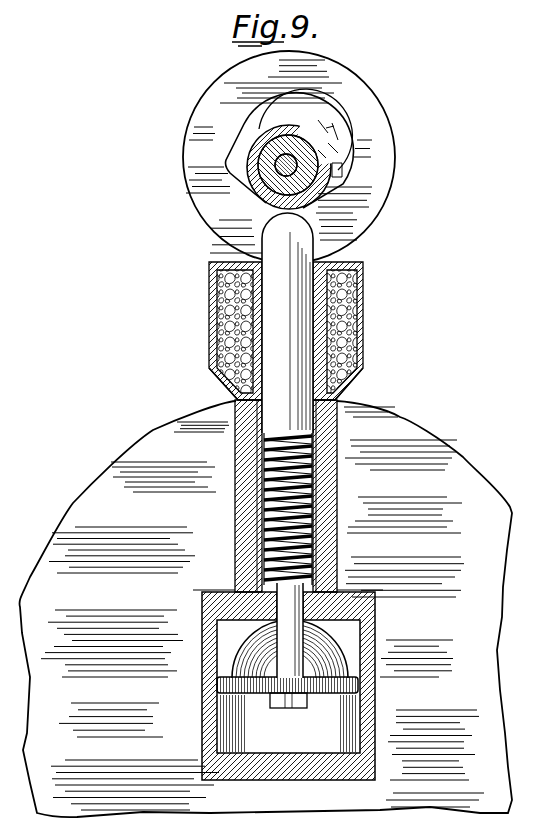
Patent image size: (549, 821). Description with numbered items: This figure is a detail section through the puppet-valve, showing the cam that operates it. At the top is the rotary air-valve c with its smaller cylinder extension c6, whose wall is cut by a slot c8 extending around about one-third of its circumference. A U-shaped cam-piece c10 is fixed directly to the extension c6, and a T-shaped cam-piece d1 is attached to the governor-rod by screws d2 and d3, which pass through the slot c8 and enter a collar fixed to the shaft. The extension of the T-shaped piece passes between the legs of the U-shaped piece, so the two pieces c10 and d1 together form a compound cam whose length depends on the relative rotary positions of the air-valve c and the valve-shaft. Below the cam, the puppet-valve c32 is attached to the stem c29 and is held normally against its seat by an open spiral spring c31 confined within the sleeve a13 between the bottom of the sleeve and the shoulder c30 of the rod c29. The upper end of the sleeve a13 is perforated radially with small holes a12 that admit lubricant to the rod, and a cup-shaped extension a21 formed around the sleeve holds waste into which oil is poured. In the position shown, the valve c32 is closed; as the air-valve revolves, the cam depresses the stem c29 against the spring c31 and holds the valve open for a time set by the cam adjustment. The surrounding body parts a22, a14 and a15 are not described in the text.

The air-valve c is at (282, 434).
The U-shaped cam-piece c10 is at (250, 155).
The smaller cylinder extension c6 is at (258, 196).
The screw d3 is at (329, 122).
The T-shaped cam-piece d1 is at (340, 144).
The slot c8 is at (322, 157).
The screw d2 is at (342, 170).
The packing gland a22 is at (363, 297).
The cup-shaped extension a21 is at (345, 343).
The small holes a12 is at (340, 396).
The open spiral spring c31 is at (312, 500).
The sleeve a13 is at (337, 588).
The dome piston a14 is at (252, 653).
The puppet-valve c32 is at (263, 695).
The nut a15 is at (290, 708).
The stem c29 is at (288, 270).
The shoulder c30 is at (277, 433).